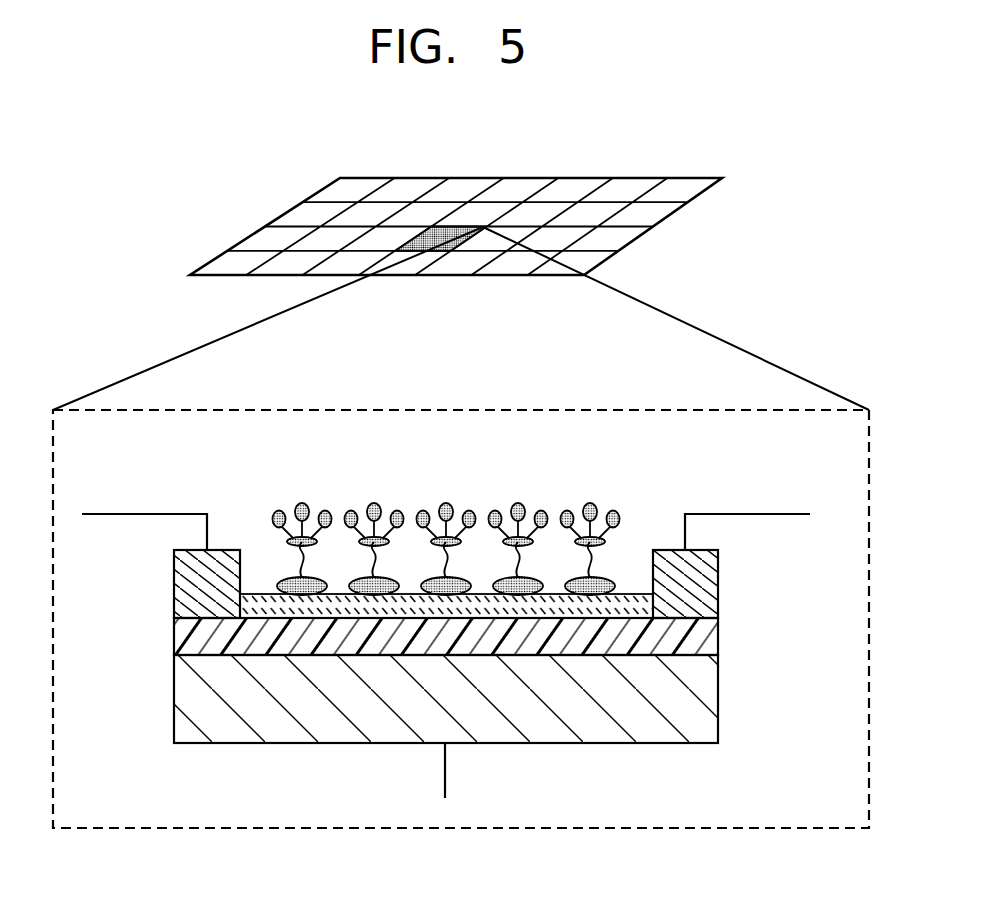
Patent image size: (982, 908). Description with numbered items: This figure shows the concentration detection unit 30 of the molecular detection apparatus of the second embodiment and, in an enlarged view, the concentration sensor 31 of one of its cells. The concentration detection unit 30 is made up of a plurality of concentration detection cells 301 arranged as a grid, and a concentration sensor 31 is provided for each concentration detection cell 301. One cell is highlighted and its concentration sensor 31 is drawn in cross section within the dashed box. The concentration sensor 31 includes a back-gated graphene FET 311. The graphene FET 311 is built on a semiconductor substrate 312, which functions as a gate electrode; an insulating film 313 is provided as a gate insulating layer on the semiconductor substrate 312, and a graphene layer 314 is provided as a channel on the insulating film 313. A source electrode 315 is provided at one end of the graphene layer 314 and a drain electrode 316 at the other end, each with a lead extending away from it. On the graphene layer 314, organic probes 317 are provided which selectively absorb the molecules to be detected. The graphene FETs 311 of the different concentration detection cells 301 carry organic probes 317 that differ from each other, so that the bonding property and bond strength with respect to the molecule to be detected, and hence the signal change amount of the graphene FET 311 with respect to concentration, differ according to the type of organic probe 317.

The concentration detection unit 30 is at (537, 152).
The concentration detection cell 301 is at (625, 187).
The concentration sensor 31 is at (473, 613).
The back-gated graphene FET 311 is at (519, 646).
The semiconductor substrate 312 is at (697, 703).
The insulating film 313 is at (697, 642).
The graphene layer 314 is at (516, 607).
The source electrode 315 is at (200, 578).
The drain electrode 316 is at (697, 567).
The organic probe 317 is at (302, 502).